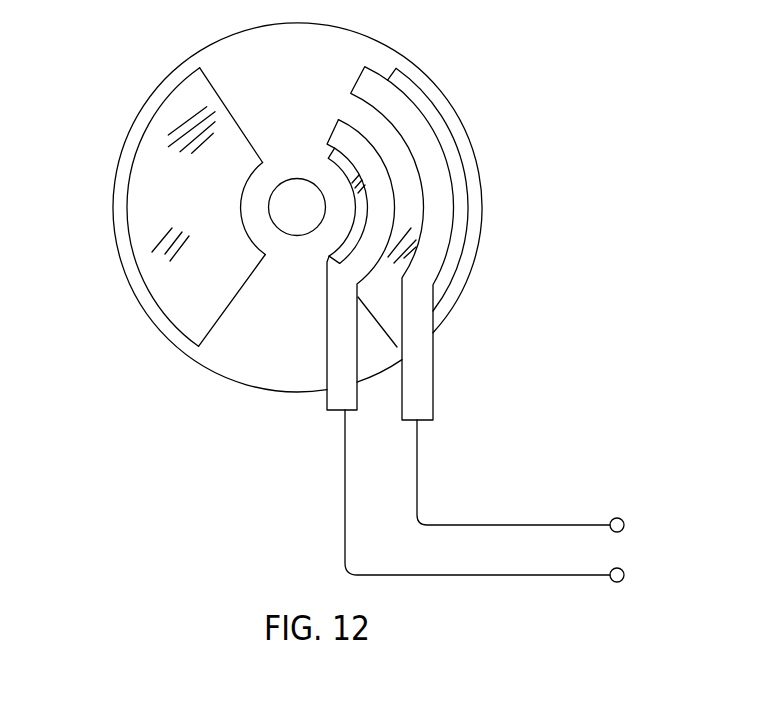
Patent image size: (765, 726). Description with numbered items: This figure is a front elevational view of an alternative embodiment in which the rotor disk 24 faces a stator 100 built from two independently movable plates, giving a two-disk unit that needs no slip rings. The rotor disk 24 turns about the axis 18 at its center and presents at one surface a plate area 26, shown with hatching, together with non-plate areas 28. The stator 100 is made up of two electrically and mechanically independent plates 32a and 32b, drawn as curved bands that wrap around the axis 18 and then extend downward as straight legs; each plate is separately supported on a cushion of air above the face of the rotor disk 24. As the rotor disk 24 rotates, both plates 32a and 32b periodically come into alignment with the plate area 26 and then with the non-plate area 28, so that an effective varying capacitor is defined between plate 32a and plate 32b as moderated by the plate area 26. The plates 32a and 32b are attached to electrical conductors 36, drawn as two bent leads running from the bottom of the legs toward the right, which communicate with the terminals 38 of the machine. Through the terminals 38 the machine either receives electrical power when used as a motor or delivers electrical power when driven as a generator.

The axis 18 is at (297, 208).
The rotor disk 24 is at (172, 349).
The plate area 26 is at (172, 269).
The non-plate areas 28 is at (257, 295).
The plate 32a is at (360, 143).
The plate 32b is at (430, 152).
The electrical conductors 36 is at (430, 525).
The terminals 38 is at (624, 570).
The stator 100 is at (497, 318).